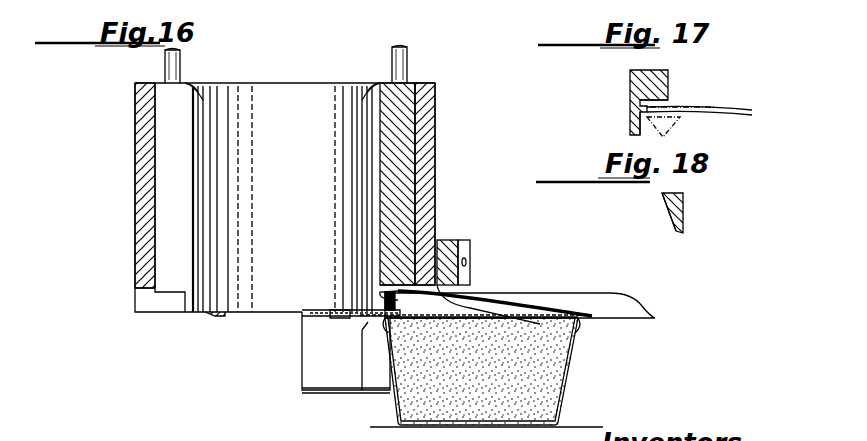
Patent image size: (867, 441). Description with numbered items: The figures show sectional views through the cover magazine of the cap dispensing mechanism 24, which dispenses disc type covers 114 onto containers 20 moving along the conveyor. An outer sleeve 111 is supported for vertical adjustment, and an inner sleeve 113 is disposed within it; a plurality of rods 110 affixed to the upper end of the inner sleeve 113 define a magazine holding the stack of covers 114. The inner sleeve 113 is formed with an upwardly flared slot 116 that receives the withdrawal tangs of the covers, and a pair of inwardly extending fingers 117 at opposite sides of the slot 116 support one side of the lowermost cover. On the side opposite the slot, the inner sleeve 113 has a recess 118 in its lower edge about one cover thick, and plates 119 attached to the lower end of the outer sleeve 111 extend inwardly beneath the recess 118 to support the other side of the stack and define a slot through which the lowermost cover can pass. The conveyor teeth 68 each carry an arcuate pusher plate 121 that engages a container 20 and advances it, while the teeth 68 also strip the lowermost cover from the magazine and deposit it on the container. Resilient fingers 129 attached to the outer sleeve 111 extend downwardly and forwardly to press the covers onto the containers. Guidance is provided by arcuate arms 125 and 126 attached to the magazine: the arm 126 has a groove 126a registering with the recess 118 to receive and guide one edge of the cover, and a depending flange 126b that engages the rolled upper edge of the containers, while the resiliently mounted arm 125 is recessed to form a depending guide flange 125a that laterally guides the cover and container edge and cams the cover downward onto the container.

In FIG. 16, the cap dispensing mechanism 24 is at (128, 141).
In FIG. 16, the outer sleeve 111 is at (135, 90).
In FIG. 16, the rods 110 is at (410, 56).
In FIG. 16, the inner sleeve 113 is at (255, 100).
In FIG. 16, the upwardly flared slot 116 is at (190, 100).
In FIG. 16, the inwardly extending fingers 117 is at (214, 318).
In FIG. 16, the recess 118 is at (338, 310).
In FIG. 16, the plates 119 is at (352, 314).
In FIG. 16, the teeth 68 is at (312, 372).
In FIG. 16, the arcuate pusher plate 121 is at (334, 394).
In FIG. 16, the arcuate arm 125 is at (560, 300).
In FIG. 18, the arcuate arm 125 is at (685, 201).
In FIG. 18, the depending guide flange 125a is at (673, 215).
In FIG. 16, the resilient fingers 129 is at (490, 300).
In FIG. 16, the disc type covers 114 is at (425, 321).
In FIG. 17, the disc type covers 114 is at (708, 112).
In FIG. 16, the containers 20 is at (565, 387).
In FIG. 17, the containers 20 is at (667, 132).
In FIG. 17, the arcuate arm 126 is at (630, 88).
In FIG. 17, the groove 126a is at (636, 102).
In FIG. 17, the depending flange 126b is at (638, 126).